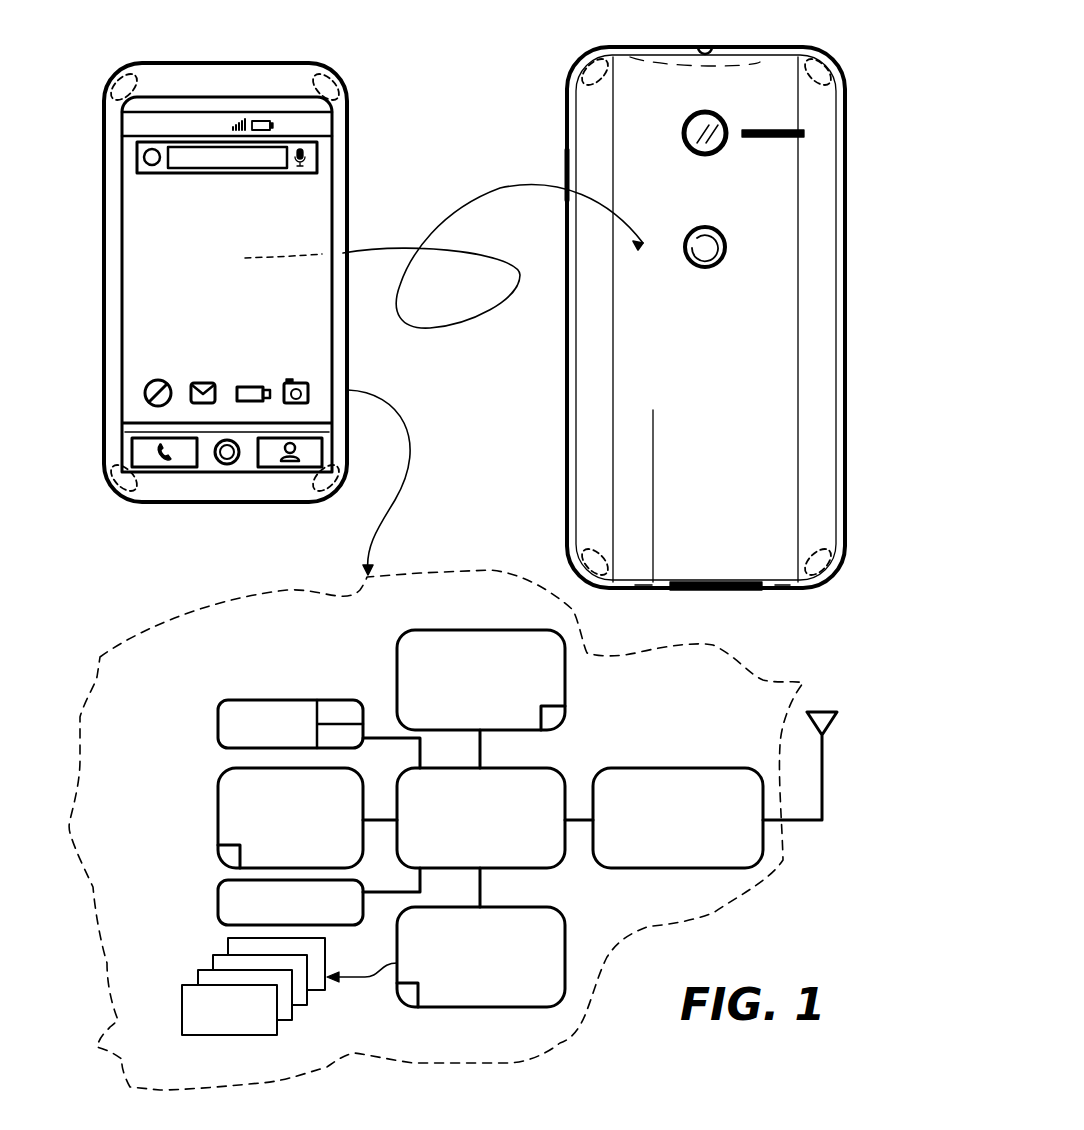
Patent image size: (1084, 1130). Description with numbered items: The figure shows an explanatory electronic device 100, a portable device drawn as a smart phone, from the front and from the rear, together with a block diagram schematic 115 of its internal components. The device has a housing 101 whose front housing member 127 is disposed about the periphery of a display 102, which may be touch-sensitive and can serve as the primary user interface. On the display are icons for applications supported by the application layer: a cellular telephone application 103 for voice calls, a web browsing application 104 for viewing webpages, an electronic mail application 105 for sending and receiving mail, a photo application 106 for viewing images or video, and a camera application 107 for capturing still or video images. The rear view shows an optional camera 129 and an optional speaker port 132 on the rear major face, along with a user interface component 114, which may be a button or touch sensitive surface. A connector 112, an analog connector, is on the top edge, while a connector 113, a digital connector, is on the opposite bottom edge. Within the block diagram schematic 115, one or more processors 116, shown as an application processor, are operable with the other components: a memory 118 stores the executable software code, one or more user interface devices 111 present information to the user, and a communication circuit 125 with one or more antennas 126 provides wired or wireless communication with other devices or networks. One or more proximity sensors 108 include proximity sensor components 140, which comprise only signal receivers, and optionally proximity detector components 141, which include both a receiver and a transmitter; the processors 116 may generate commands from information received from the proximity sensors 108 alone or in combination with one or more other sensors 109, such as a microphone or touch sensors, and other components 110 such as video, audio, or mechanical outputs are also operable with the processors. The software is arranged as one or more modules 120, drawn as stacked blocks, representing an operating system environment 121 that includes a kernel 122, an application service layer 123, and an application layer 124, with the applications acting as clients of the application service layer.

The electronic device 100 is at (447, 140).
The housing 101 is at (303, 66).
The display 102 is at (160, 295).
The cellular telephone application 103 is at (156, 478).
The web browsing application 104 is at (160, 379).
The electronic mail application 105 is at (205, 380).
The photo application 106 is at (244, 382).
The camera application 107 is at (297, 380).
The proximity sensors 108 is at (133, 73).
The other sensors 109 is at (218, 900).
The other components 110 is at (218, 800).
The user interface devices 111 is at (397, 665).
The connector 112 is at (703, 44).
The connector 113 is at (720, 590).
The user interface component 114 is at (723, 262).
The block diagram schematic 115 is at (773, 687).
The processors 116 is at (565, 775).
The memory 118 is at (565, 950).
The modules 120 is at (175, 954).
The operating system environment 121 is at (322, 990).
The kernel 122 is at (307, 1005).
The application service layer 123 is at (293, 1020).
The application layer 124 is at (215, 1035).
The communication circuit 125 is at (667, 768).
The antennas 126 is at (818, 712).
The front housing member 127 is at (348, 205).
The camera 129 is at (688, 125).
The speaker port 132 is at (752, 129).
The proximity sensor components 140 is at (337, 700).
The proximity detector components 141 is at (360, 735).